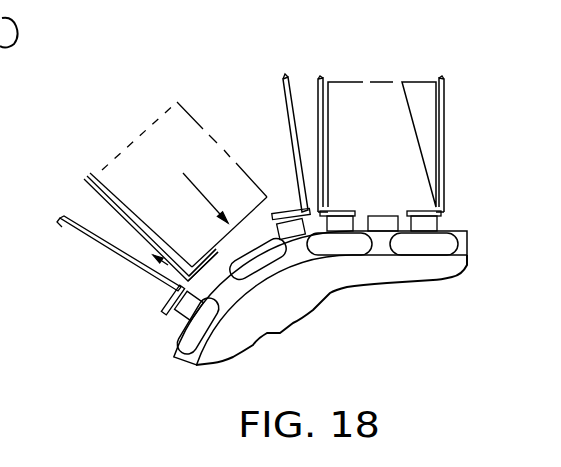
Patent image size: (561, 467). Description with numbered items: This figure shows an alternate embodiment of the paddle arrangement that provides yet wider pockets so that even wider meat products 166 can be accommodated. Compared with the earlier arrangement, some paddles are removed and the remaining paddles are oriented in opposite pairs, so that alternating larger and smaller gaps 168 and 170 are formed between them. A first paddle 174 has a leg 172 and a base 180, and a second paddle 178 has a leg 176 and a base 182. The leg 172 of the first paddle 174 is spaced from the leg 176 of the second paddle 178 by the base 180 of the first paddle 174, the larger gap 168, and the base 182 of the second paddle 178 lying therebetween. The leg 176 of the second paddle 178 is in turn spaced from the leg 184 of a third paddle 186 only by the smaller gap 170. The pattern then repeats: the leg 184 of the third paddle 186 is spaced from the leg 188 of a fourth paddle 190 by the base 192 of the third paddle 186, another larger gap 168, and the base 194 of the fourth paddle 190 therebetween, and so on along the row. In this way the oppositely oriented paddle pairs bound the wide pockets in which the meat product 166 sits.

The meat product 166 is at (352, 81).
The larger gap 168 is at (383, 209).
The smaller gap 170 is at (315, 213).
The leg 172 is at (150, 220).
The first paddle 174 is at (90, 174).
The leg 176 is at (290, 120).
The second paddle 178 is at (284, 77).
The base 180 is at (200, 257).
The base 182 is at (281, 211).
The leg 184 is at (322, 128).
The third paddle 186 is at (318, 77).
The leg 188 is at (443, 138).
The fourth paddle 190 is at (443, 78).
The base 192 is at (340, 211).
The base 194 is at (421, 212).